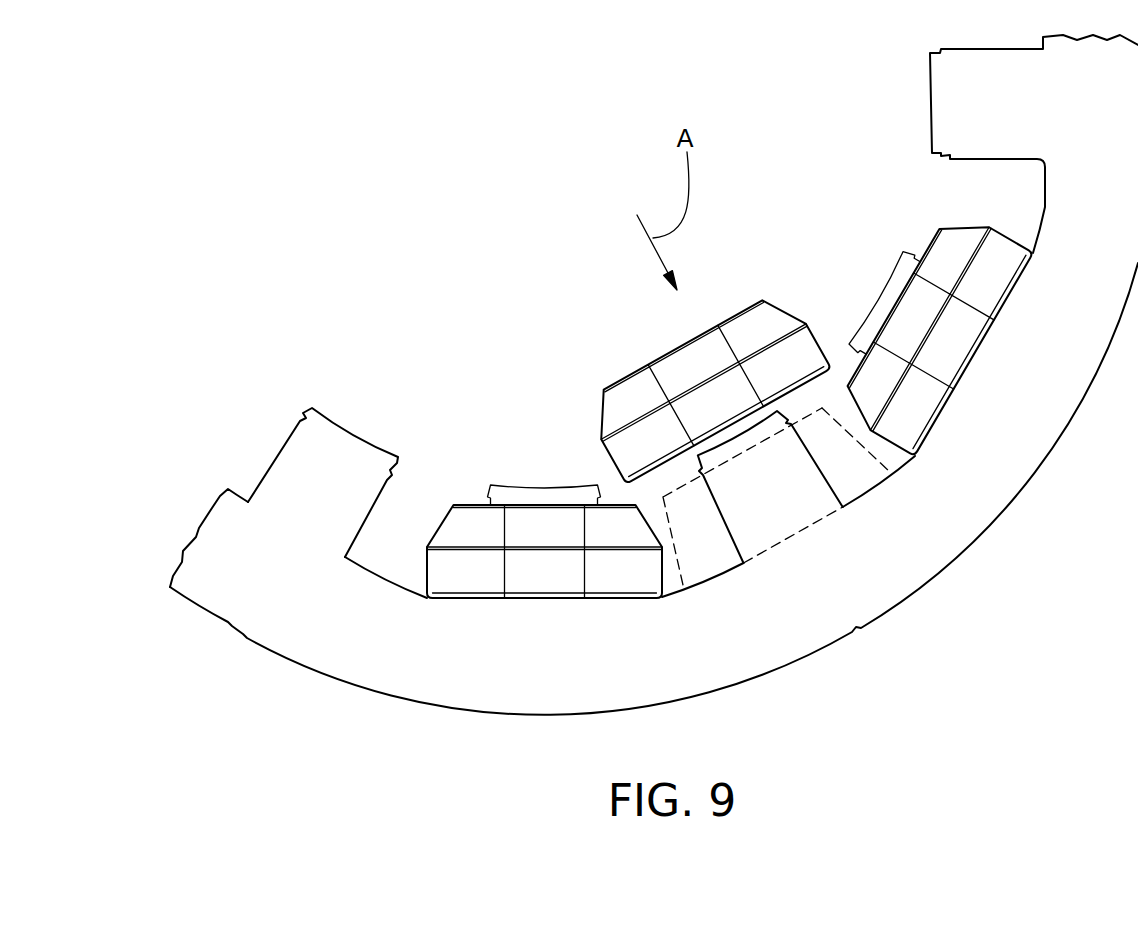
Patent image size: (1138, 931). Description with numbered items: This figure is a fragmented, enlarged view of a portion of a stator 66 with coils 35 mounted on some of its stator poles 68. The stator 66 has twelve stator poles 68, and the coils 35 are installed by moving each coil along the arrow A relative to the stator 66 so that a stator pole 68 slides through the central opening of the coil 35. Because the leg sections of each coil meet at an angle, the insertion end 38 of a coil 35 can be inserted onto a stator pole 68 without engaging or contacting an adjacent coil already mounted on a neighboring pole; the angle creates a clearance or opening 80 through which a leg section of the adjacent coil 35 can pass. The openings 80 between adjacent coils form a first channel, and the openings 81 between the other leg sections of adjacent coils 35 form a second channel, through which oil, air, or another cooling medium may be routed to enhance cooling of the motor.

The coil 35 is at (470, 580).
The insertion end 38 is at (673, 460).
The stator 66 is at (368, 652).
The stator pole 68 is at (332, 445).
The opening 80 is at (650, 510).
The opening 81 is at (673, 587).